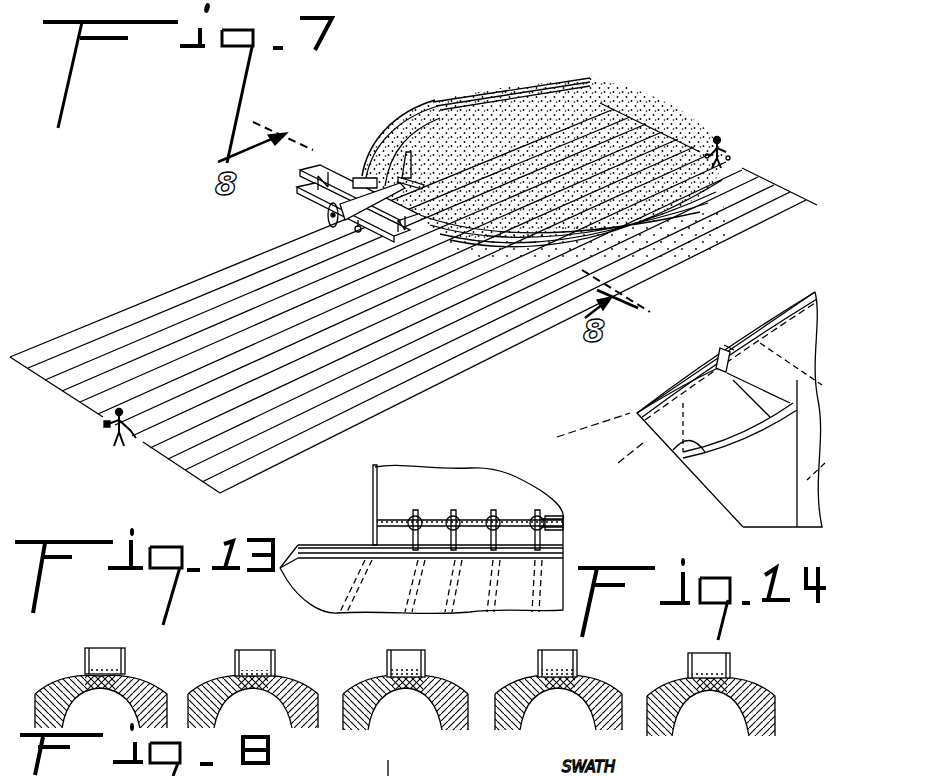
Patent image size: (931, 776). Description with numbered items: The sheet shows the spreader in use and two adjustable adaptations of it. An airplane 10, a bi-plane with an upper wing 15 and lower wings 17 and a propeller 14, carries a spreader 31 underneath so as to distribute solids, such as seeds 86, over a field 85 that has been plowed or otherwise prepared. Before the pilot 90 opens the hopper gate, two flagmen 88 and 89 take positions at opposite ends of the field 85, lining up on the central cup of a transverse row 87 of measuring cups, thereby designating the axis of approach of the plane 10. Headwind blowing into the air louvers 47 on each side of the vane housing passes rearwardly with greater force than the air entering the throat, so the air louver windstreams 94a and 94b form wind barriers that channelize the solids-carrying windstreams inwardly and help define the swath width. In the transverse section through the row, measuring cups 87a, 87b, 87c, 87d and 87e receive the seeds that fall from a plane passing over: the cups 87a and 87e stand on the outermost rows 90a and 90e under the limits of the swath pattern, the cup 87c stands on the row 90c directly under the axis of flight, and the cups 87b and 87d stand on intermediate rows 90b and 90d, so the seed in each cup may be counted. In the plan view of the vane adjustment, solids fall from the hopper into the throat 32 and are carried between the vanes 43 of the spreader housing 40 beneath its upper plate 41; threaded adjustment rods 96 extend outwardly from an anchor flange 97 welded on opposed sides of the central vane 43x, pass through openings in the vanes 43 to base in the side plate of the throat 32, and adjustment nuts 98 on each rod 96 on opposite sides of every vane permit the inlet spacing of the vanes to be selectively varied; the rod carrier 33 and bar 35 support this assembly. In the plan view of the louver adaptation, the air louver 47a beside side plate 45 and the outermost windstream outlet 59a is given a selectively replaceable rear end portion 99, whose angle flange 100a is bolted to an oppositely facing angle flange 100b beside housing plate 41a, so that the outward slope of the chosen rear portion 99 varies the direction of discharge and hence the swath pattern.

In FIG. 7, the airplane 10 is at (360, 209).
In FIG. 7, the propeller 14 is at (328, 220).
In FIG. 7, the upper wing 15 is at (335, 176).
In FIG. 7, the lower wings 17 is at (325, 197).
In FIG. 7, the spreader 31 is at (440, 191).
In FIG. 13, the throat 32 is at (372, 495).
In FIG. 13, the shaft 33 is at (460, 501).
In FIG. 13, the bar 35 is at (345, 544).
In FIG. 13, the spreader fan or vane housing 40 is at (297, 547).
In FIG. 13, the upper plate 41 is at (510, 592).
In FIG. 14, the housing plate 41a is at (810, 350).
In FIG. 13, the vanes 43 is at (495, 512).
In FIG. 14, the vanes 43 is at (790, 492).
In FIG. 13, the central vane 43x is at (542, 512).
In FIG. 14, the side plate 45 is at (680, 452).
In FIG. 7, the air louvers 47 is at (360, 176).
In FIG. 14, the air louver 47a is at (795, 318).
In FIG. 14, the outermost windstream outlet 59a is at (752, 482).
In FIG. 7, the field 85 is at (215, 290).
In FIG. 7, the seeds 86 is at (580, 105).
In FIG. 7, the row of measuring cups 87 is at (600, 277).
In FIG. 8, the measuring cup 87a is at (142, 628).
In FIG. 8, the measuring cup 87b is at (275, 658).
In FIG. 8, the measuring cup 87c is at (425, 660).
In FIG. 8, the measuring cup 87d is at (578, 668).
In FIG. 8, the measuring cup 87e is at (732, 668).
In FIG. 7, the flagman 88 is at (730, 150).
In FIG. 7, the flagman 89 is at (105, 428).
In FIG. 7, the pilot 90 is at (412, 152).
In FIG. 8, the outermost row 90a is at (65, 680).
In FIG. 8, the intermediate row 90b is at (212, 680).
In FIG. 8, the central row 90c is at (360, 682).
In FIG. 8, the intermediate row 90d is at (515, 682).
In FIG. 8, the outermost row 90e is at (676, 682).
In FIG. 7, the air louver windstream 94a is at (640, 232).
In FIG. 7, the air louver windstream 94b is at (425, 115).
In FIG. 13, the threaded adjustment rods 96 is at (512, 520).
In FIG. 13, the anchor flange 97 is at (528, 530).
In FIG. 13, the adjustment nuts 98 is at (417, 512).
In FIG. 14, the rear end portions 99 is at (663, 408).
In FIG. 14, the angle flange 100a is at (718, 366).
In FIG. 14, the angle flange 100b is at (731, 345).